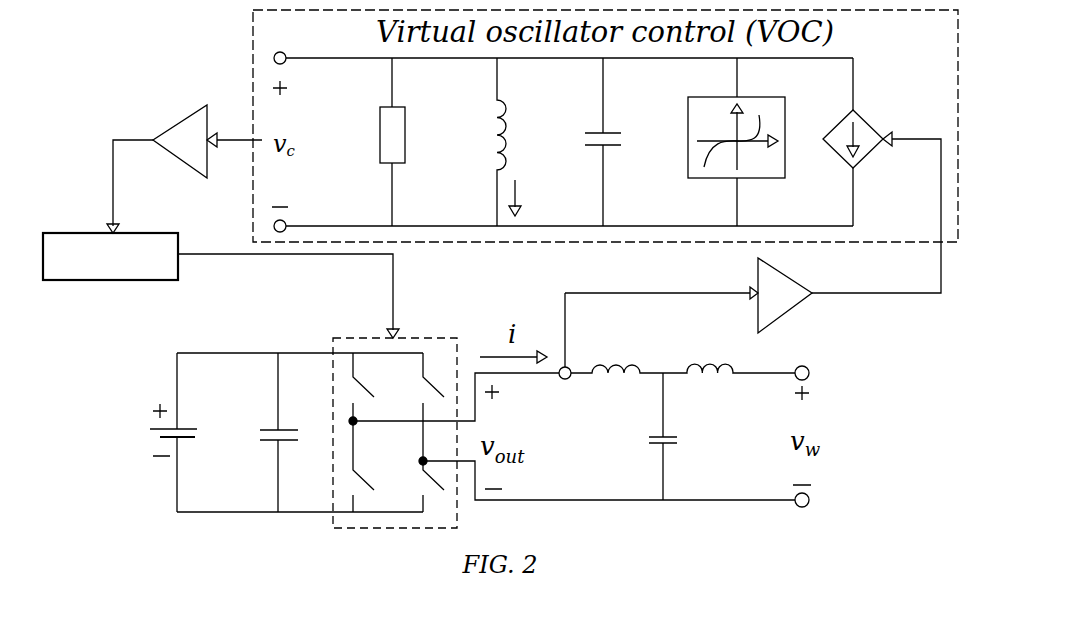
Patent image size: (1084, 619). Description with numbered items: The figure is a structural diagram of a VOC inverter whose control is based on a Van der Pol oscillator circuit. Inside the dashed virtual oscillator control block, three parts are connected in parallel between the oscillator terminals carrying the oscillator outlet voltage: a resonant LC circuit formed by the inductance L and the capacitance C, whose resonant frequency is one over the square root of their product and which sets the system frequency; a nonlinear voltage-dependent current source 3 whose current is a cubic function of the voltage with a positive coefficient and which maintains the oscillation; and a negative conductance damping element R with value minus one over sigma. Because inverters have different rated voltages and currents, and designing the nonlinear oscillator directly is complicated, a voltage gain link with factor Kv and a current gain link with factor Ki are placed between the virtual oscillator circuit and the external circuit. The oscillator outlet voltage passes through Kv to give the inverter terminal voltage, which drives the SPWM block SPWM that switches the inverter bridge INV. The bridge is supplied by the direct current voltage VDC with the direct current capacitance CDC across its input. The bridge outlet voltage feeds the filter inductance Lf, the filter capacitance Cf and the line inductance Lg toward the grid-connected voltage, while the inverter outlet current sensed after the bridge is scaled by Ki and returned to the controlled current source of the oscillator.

The voltage gain factor Kv is at (173, 169).
The current gain factor Ki is at (688, 312).
The SPWM block SPWM is at (221, 285).
The inductance L is at (523, 142).
The capacitance C is at (618, 142).
The negative conductance damping element R is at (438, 141).
The nonlinear voltage-dependent current source 3 is at (736, 142).
The inverter bridge INV is at (395, 433).
The direct current voltage VDC is at (258, 432).
The direct current capacitance CDC is at (251, 432).
The inductance of a filter Lf is at (617, 347).
The line inductance Lg is at (729, 348).
The capacitance of a filter Cf is at (640, 436).